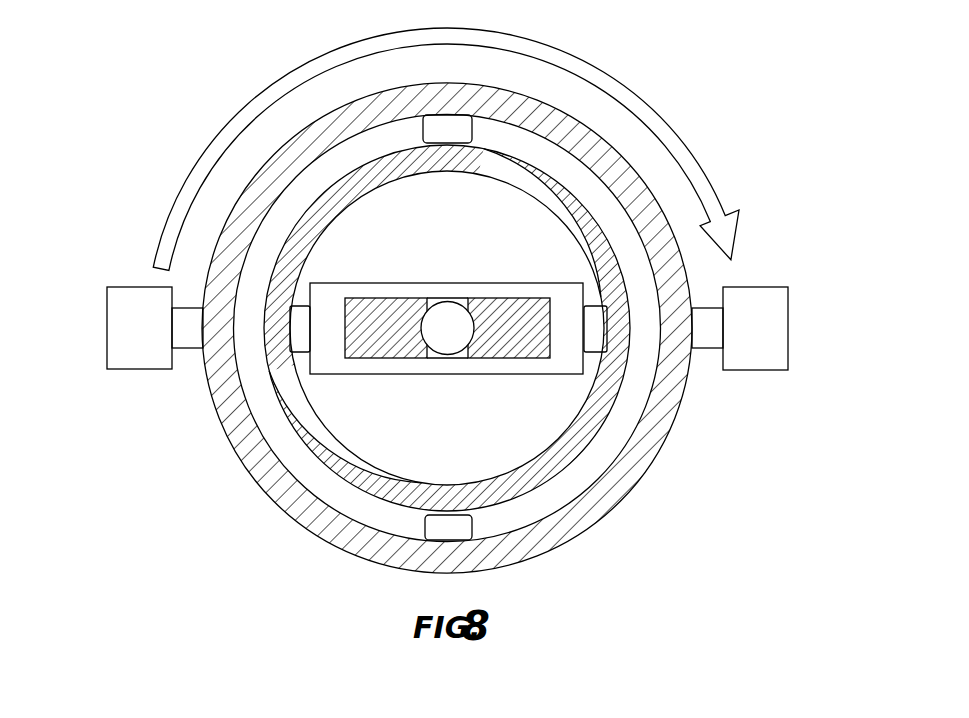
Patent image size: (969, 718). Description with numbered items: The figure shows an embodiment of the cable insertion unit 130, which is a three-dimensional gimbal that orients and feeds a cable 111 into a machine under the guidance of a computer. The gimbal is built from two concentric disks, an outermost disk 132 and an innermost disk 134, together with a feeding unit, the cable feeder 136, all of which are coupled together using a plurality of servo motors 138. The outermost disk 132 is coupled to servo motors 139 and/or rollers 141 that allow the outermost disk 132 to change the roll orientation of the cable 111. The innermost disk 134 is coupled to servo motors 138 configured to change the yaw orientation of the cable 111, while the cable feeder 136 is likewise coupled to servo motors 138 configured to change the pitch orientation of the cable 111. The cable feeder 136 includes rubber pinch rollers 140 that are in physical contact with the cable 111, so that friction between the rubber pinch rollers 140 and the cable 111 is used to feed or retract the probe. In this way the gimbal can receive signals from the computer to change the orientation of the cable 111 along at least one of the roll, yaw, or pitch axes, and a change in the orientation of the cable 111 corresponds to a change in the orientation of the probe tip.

The cable insertion unit 130 is at (129, 164).
The outermost disk 132 is at (655, 193).
The innermost disk 134 is at (617, 402).
The cable feeder 136 is at (342, 375).
The servo motors 138 is at (462, 115).
The servo motors 139 is at (107, 302).
The rubber pinch rollers 140 is at (388, 360).
The cable 111 is at (443, 358).
The rollers 141 is at (190, 349).